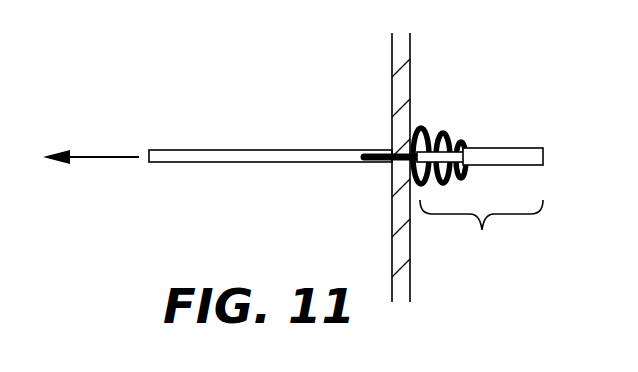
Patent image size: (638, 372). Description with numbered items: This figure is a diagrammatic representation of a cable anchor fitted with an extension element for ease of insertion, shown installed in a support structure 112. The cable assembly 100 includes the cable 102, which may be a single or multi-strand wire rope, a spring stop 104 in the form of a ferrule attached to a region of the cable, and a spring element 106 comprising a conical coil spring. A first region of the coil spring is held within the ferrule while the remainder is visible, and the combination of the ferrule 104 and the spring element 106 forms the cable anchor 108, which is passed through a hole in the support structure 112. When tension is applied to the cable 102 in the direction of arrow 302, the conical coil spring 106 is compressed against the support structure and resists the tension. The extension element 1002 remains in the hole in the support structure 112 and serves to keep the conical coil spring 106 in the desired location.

The cable assembly 100 is at (238, 196).
The cable 102 is at (200, 150).
The spring stop 104 is at (530, 148).
The spring element 106 is at (443, 140).
The cable anchor 108 is at (481, 232).
The support structure 112 is at (392, 88).
The arrow 302 is at (98, 156).
The extension element 1002 is at (367, 151).